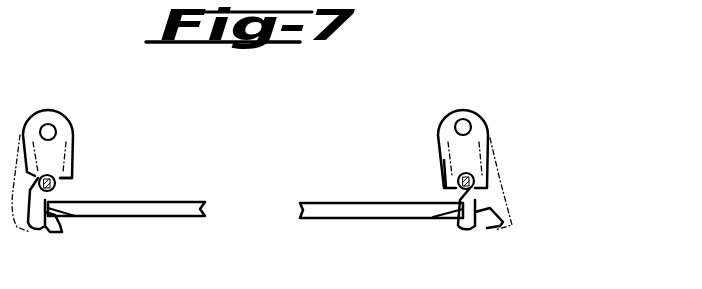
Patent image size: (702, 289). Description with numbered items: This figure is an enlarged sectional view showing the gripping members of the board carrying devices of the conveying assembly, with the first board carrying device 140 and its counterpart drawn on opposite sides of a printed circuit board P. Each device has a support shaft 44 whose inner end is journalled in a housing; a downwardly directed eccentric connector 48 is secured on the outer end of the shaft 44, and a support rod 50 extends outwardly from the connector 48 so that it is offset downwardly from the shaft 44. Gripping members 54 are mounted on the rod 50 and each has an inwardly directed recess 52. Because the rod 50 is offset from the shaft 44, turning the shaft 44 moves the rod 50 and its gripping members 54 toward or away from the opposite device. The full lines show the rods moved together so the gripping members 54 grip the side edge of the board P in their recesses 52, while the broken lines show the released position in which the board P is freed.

The support shaft 44 is at (52, 129).
The eccentric connector 48 is at (70, 176).
The support rod 50 is at (56, 185).
The recess 52 is at (62, 216).
The gripping member 54 is at (52, 232).
The first board carrying device 140 is at (535, 168).
The printed circuit board P is at (192, 206).